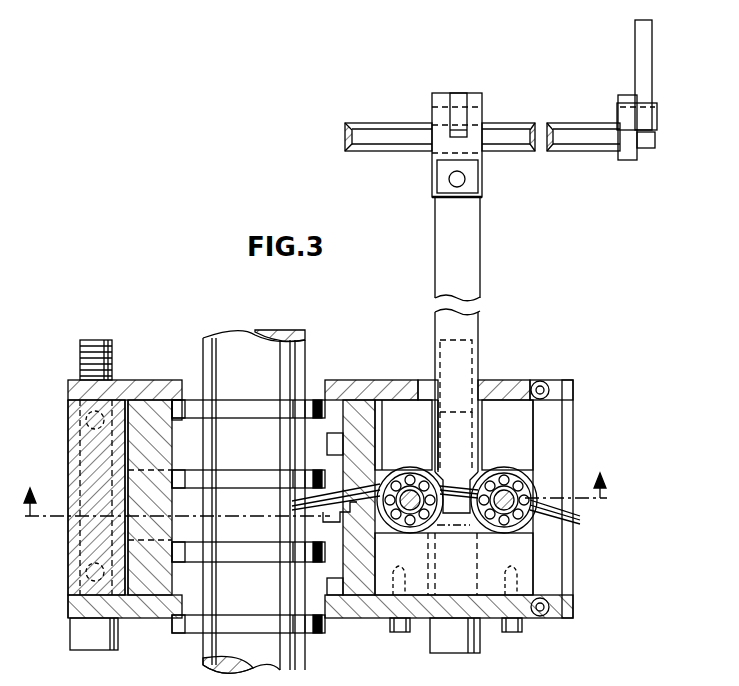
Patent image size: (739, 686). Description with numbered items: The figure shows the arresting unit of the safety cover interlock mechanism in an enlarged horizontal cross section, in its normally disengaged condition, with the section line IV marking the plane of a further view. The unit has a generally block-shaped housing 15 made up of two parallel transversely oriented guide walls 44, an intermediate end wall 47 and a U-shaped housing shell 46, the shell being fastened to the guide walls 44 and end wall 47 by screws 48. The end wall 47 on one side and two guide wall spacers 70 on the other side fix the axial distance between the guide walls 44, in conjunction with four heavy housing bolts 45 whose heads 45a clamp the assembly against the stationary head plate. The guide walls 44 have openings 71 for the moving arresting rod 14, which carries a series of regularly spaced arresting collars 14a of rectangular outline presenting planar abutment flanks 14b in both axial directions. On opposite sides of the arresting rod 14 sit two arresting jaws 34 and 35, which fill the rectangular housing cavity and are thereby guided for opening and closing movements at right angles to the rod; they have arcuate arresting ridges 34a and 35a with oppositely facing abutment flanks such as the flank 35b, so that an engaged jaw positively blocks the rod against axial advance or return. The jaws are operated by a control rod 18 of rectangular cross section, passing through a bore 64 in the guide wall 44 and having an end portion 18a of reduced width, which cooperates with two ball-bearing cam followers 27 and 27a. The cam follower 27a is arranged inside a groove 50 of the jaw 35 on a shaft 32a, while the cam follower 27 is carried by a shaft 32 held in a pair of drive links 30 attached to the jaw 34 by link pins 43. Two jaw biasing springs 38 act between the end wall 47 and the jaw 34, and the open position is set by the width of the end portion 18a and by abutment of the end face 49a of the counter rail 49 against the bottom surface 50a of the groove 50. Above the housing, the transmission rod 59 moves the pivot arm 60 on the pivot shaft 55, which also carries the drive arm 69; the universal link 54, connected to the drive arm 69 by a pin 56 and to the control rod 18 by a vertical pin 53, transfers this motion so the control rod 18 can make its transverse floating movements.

The arresting rod 14 is at (228, 346).
The arresting collars 14a is at (274, 550).
The abutment flanks 14b is at (206, 540).
The housing 15 is at (368, 380).
The control rod 18 is at (462, 266).
The end portion 18a is at (455, 500).
The cam follower 27 is at (524, 508).
The cam follower 27a is at (315, 503).
The drive links 30 is at (530, 472).
The shaft 32 is at (454, 560).
The shaft 32a is at (412, 468).
The arresting jaw 34 is at (146, 410).
The arresting ridge 34a is at (178, 408).
The arresting jaw 35 is at (352, 420).
The arresting ridge 35a is at (346, 619).
The abutment flank 35b is at (322, 476).
The jaw biasing springs 38 is at (127, 446).
The link pins 43 is at (70, 528).
The guide walls 44 is at (512, 392).
The housing bolts 45 is at (86, 357).
The heads 45a is at (90, 633).
The housing shell 46 is at (574, 392).
The end wall 47 is at (72, 418).
The screws 48 is at (545, 384).
The counter rail 49 is at (522, 552).
The end face 49a is at (372, 600).
The groove 50 is at (413, 408).
The bottom surface 50a is at (374, 452).
The vertical pin 53 is at (468, 182).
The universal link 54 is at (440, 145).
The pivot shaft 55 is at (378, 128).
The pin 56 is at (477, 118).
The transmission rod 59 is at (643, 55).
The pivot arm 60 is at (626, 97).
The bore 64 is at (483, 390).
The drive arm 69 is at (455, 95).
The guide wall spacers 70 is at (427, 554).
The openings 71 is at (180, 603).
The section line IV is at (315, 482).